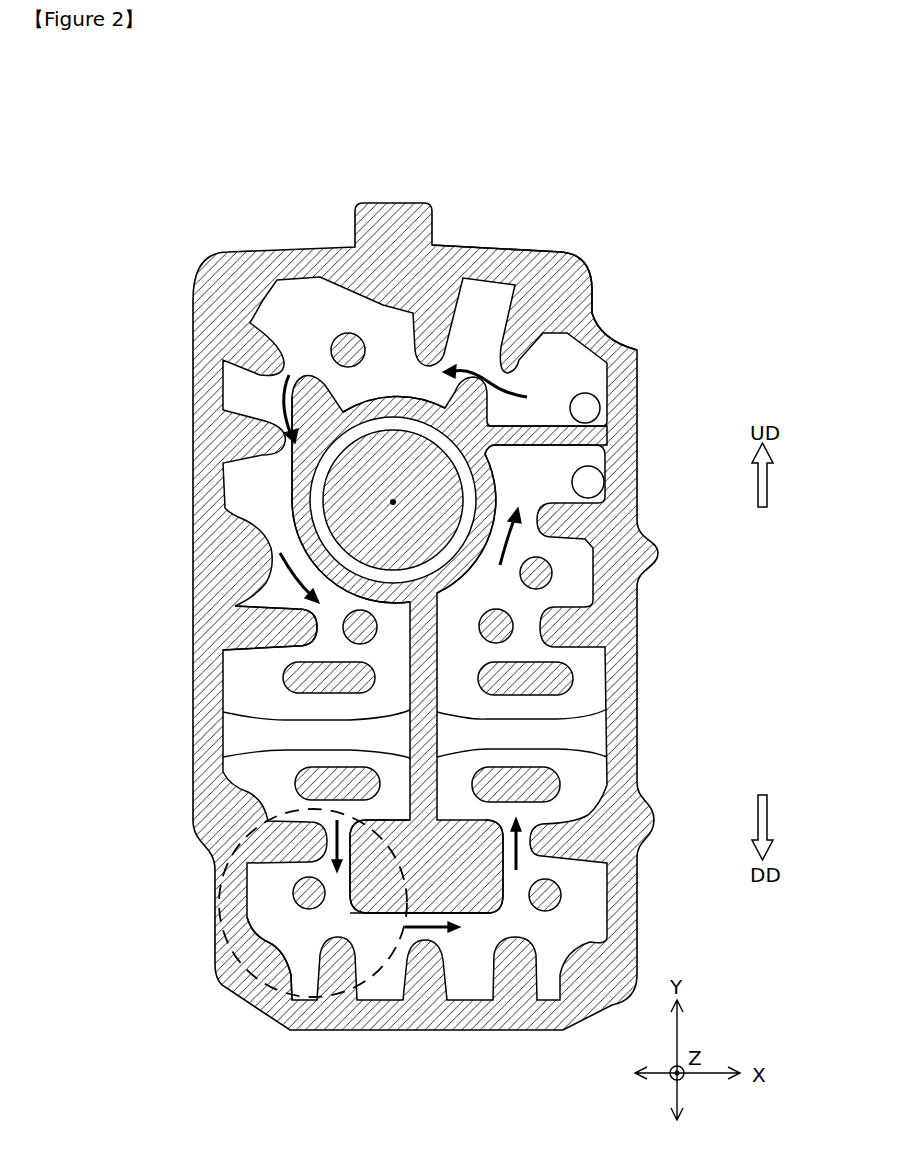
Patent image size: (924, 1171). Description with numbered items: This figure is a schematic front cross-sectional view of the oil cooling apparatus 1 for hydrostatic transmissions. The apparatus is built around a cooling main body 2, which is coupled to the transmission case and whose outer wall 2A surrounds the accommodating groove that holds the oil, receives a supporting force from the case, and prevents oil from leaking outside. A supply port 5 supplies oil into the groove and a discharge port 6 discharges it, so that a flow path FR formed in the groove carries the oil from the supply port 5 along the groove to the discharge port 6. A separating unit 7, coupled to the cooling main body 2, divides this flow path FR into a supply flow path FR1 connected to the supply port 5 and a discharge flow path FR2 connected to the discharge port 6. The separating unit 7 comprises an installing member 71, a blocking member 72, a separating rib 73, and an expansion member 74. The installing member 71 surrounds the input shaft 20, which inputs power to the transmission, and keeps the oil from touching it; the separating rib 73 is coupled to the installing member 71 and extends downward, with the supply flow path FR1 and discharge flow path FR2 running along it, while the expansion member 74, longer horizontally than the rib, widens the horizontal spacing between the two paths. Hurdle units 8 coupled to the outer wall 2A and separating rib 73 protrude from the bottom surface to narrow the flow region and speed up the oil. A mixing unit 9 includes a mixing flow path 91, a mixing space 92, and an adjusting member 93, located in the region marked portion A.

The oil cooling apparatus 1 is at (185, 150).
The cooling main body 2 is at (432, 637).
The outer wall 2A is at (553, 278).
The supply port 5 is at (586, 414).
The discharge port 6 is at (588, 487).
The separating unit 7 is at (355, 654).
The installing member 71 is at (302, 506).
The blocking member 72 is at (525, 445).
The separating rib 73 is at (420, 649).
The expansion member 74 is at (320, 842).
The hurdle unit 8 is at (587, 737).
The mixing unit 9 is at (350, 1007).
The mixing flow path 91 is at (350, 898).
The mixing space 92 is at (295, 928).
The adjusting member 93 is at (303, 910).
The input shaft 20 is at (350, 485).
The flow path FR is at (521, 585).
The supply flow path FR1 is at (397, 638).
The discharge flow path FR2 is at (468, 662).
The portion A is at (238, 966).